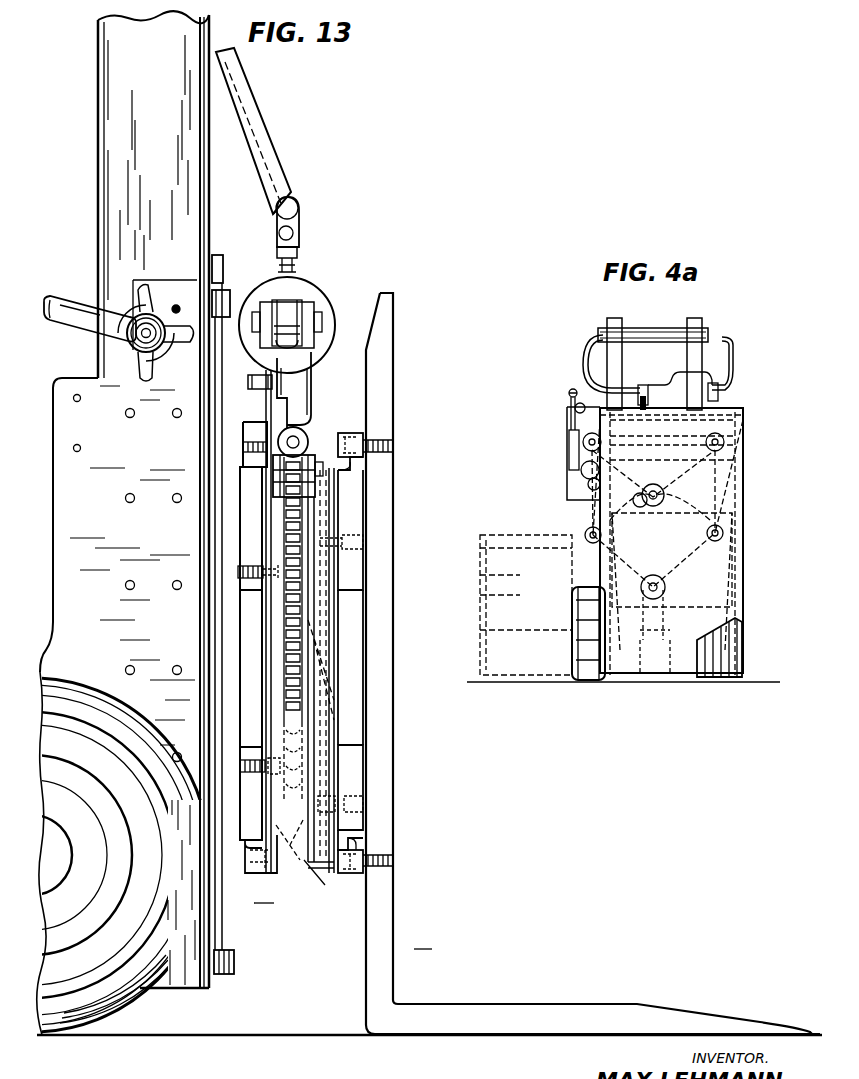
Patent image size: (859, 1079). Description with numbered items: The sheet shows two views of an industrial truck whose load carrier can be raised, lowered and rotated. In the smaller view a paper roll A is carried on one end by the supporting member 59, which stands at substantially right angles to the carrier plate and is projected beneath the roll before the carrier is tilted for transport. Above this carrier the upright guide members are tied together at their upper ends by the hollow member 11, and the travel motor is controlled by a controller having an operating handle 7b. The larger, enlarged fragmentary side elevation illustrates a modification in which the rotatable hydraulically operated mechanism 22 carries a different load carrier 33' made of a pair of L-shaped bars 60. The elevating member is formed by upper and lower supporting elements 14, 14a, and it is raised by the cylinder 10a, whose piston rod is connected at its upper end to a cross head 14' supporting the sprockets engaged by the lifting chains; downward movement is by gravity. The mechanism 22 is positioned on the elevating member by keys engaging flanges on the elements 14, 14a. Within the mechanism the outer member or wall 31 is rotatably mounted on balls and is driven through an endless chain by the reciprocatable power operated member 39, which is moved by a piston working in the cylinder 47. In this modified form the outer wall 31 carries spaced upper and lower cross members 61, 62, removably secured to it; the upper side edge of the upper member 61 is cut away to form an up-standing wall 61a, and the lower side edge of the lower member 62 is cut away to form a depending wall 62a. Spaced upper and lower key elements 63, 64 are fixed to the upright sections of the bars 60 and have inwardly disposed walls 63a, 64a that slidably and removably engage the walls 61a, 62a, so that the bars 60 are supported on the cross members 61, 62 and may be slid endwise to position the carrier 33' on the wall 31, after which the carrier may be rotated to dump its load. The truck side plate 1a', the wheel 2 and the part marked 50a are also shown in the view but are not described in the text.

In FIG. 13, the side plate of truck frame 1a' is at (114, 706).
In FIG. 13, the cross head 14' is at (227, 245).
In FIG. 13, the cylinder 10a is at (226, 300).
In FIG. 13, the tilt lever 50a is at (243, 148).
In FIG. 13, the cylinder 47 is at (305, 290).
In FIG. 13, the power operated member 39 is at (302, 388).
In FIG. 13, the outer member or wall 31 is at (338, 876).
In FIG. 13, the upper supporting element 14 is at (225, 631).
In FIG. 13, the lower supporting element 14a is at (245, 782).
In FIG. 13, the upper key element 63 is at (350, 433).
In FIG. 13, the up-standing wall 61a is at (360, 462).
In FIG. 13, the inwardly disposed wall 63a is at (346, 470).
In FIG. 13, the upper cross member 61 is at (360, 522).
In FIG. 13, the lower cross member 62 is at (360, 775).
In FIG. 13, the inwardly disposed wall 64a is at (350, 835).
In FIG. 13, the depending wall 62a is at (358, 852).
In FIG. 13, the lower key element 64 is at (357, 876).
In FIG. 13, the L-shaped bar 60 is at (388, 878).
In FIG. 13, the hydraulically operated mechanism 22 is at (264, 895).
In FIG. 13, the load carrier 33' is at (593, 664).
In FIG. 13, the wheel 2 is at (106, 985).
In FIG. 4a, the wheel 2 is at (722, 684).
In FIG. 4a, the hollow member 11 is at (710, 334).
In FIG. 4a, the operating handle 7b is at (567, 407).
In FIG. 4a, the paper roll A is at (734, 494).
In FIG. 4a, the supporting member 59 is at (650, 678).